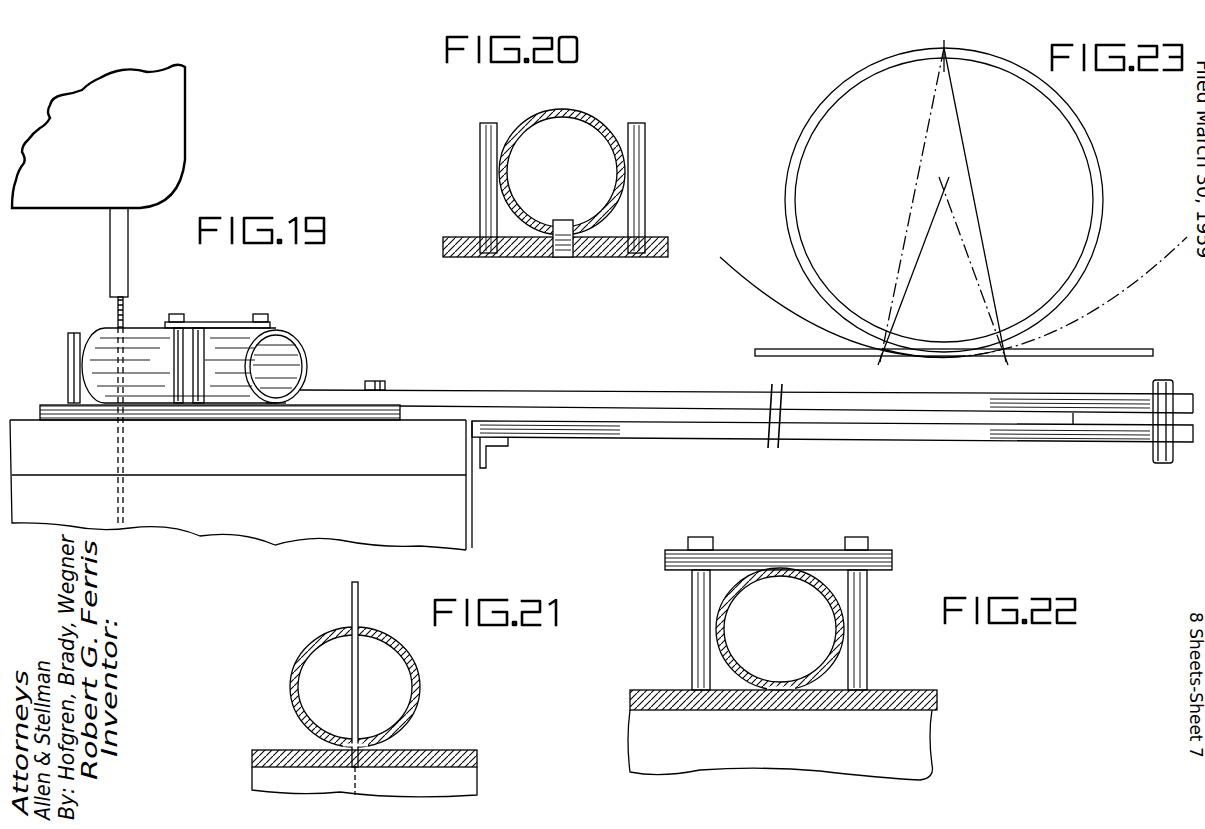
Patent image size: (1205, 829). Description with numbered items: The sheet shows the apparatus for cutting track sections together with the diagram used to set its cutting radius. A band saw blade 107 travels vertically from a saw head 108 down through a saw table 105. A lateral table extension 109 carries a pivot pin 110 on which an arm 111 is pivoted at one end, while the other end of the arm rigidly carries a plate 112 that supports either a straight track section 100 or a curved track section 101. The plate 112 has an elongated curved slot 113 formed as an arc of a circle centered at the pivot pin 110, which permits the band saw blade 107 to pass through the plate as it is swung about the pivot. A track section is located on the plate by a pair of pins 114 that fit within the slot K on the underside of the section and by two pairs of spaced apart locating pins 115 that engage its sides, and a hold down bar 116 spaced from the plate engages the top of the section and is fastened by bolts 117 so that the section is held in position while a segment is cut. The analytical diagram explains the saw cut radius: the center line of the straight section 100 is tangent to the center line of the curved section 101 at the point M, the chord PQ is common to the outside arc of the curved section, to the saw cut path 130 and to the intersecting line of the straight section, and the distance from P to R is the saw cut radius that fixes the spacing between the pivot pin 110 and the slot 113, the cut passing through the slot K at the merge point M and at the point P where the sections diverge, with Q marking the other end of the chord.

In FIG. 23, the straight track section 100 is at (826, 356).
In FIG. 19, the curved track section 101 is at (308, 352).
In FIG. 20, the curved track section 101 is at (593, 124).
In FIG. 21, the curved track section 101 is at (307, 648).
In FIG. 22, the curved track section 101 is at (745, 697).
In FIG. 23, the curved track section 101 is at (1103, 192).
In FIG. 19, the saw table 105 is at (457, 508).
In FIG. 21, the saw table 105 is at (480, 777).
In FIG. 22, the saw table 105 is at (920, 734).
In FIG. 19, the band saw blade 107 is at (118, 306).
In FIG. 21, the band saw blade 107 is at (352, 596).
In FIG. 19, the saw head 108 is at (170, 136).
In FIG. 19, the lateral table extension 109 is at (928, 442).
In FIG. 19, the pivot pin 110 is at (1160, 463).
In FIG. 19, the arm 111 is at (648, 395).
In FIG. 19, the plate 112 is at (385, 420).
In FIG. 20, the plate 112 is at (668, 240).
In FIG. 21, the plate 112 is at (440, 752).
In FIG. 22, the plate 112 is at (937, 694).
In FIG. 21, the curved slot 113 is at (350, 766).
In FIG. 20, the pins 114 is at (567, 220).
In FIG. 19, the locating pins 115 is at (68, 340).
In FIG. 20, the locating pins 115 is at (480, 153).
In FIG. 19, the hold down bar 116 is at (225, 322).
In FIG. 22, the hold down bar 116 is at (777, 558).
In FIG. 19, the bolts 117 is at (180, 328).
In FIG. 22, the bolts 117 is at (692, 594).
In FIG. 23, the saw cut path 130 is at (757, 292).
In FIG. 19, the slot K is at (280, 405).
In FIG. 21, the slot K is at (365, 742).
In FIG. 22, the slot K is at (785, 688).
In FIG. 23, the point M is at (950, 358).
In FIG. 23, the point P is at (887, 348).
In FIG. 23, the point Q is at (1003, 345).
In FIG. 23, the point R is at (950, 50).